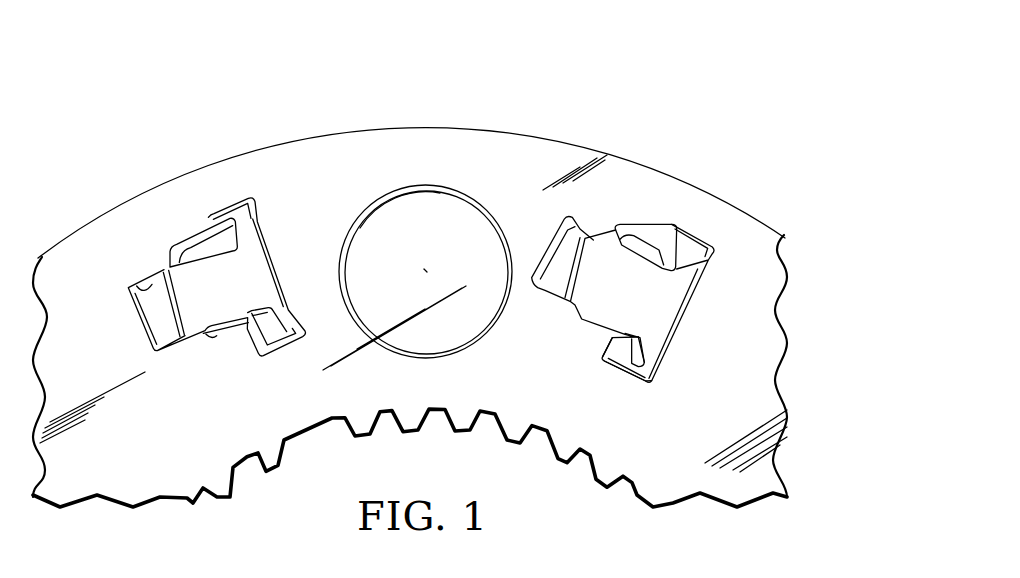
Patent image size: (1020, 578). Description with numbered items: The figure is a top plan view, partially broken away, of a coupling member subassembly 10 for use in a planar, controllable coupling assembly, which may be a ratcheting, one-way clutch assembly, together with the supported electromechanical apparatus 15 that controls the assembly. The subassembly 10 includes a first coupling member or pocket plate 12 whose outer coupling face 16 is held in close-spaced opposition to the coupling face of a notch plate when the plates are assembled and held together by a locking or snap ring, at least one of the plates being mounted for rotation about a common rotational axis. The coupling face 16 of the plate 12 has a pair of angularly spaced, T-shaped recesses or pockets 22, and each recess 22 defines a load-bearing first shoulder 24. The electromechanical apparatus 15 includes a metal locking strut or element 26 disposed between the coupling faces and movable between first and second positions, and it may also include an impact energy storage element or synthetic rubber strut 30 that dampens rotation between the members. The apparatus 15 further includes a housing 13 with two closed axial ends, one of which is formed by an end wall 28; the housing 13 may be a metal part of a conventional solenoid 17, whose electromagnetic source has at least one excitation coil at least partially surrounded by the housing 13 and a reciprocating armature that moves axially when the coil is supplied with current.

The coupling member subassembly 10 is at (672, 66).
The first coupling member 12 is at (545, 135).
The housing 13 is at (425, 185).
The electromechanical apparatus 15 is at (455, 187).
The coupling face 16 is at (745, 265).
The solenoid 17 is at (400, 155).
The T-shaped recesses 22 is at (132, 285).
The first shoulder 24 is at (263, 268).
The locking strut 26 is at (249, 195).
The end wall 28 is at (425, 270).
The synthetic rubber strut 30 is at (688, 219).